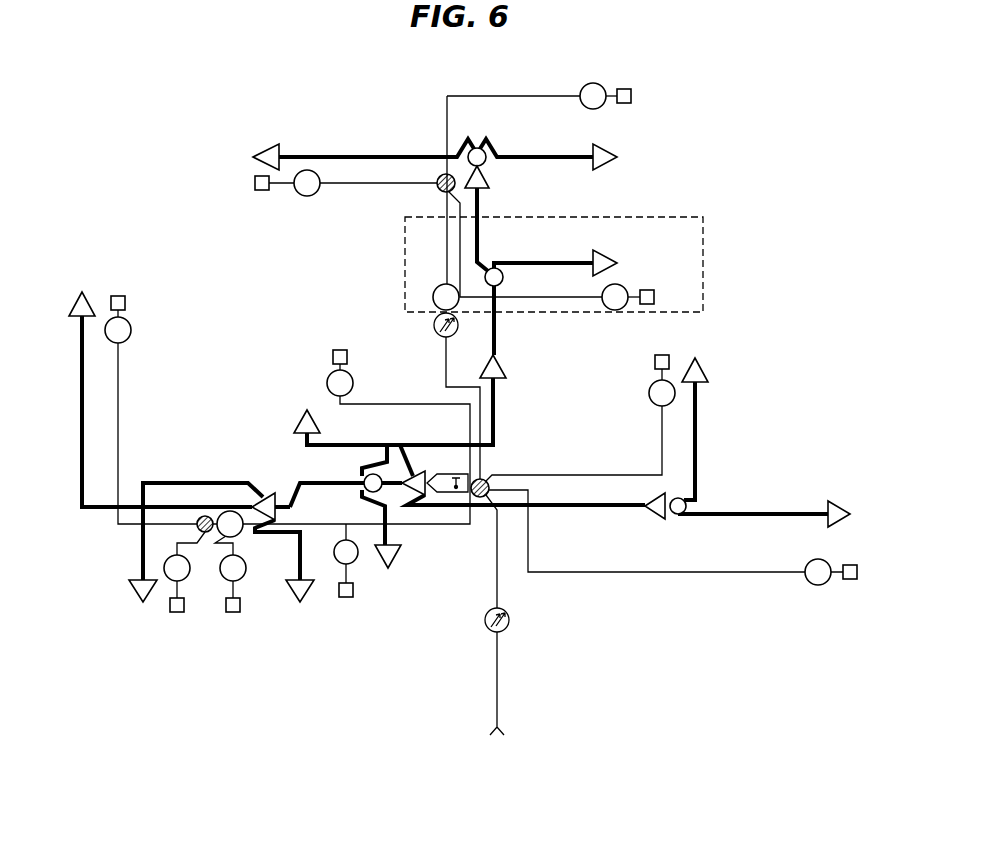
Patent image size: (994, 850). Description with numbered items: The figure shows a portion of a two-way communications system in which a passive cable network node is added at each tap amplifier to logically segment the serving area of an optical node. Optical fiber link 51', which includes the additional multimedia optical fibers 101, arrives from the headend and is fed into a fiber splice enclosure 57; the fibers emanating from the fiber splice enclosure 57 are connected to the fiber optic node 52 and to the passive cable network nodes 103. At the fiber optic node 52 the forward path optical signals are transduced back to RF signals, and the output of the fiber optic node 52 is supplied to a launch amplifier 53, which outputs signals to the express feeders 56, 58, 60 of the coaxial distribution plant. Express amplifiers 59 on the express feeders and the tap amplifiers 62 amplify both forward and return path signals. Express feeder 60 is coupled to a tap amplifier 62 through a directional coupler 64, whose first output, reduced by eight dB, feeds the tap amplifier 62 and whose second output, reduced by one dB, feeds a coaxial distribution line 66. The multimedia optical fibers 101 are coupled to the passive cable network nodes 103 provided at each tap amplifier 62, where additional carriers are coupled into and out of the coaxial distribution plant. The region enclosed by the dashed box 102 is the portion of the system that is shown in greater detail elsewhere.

The optical fiber link 51' is at (472, 615).
The fiber optic node 52 is at (467, 474).
The launch amplifier 53 is at (408, 470).
The express feeder 56 is at (558, 511).
The fiber splice enclosure 57 is at (487, 481).
The express feeder 58 is at (338, 482).
The express amplifier 59 is at (492, 176).
The express feeder 60 is at (496, 406).
The tap amplifier 62 is at (256, 150).
The directional coupler 64 is at (504, 279).
The coaxial distribution line 66 is at (481, 233).
The multimedia optical fiber 101 is at (507, 96).
The box 102 is at (613, 217).
The passive cable network node 103 is at (258, 190).